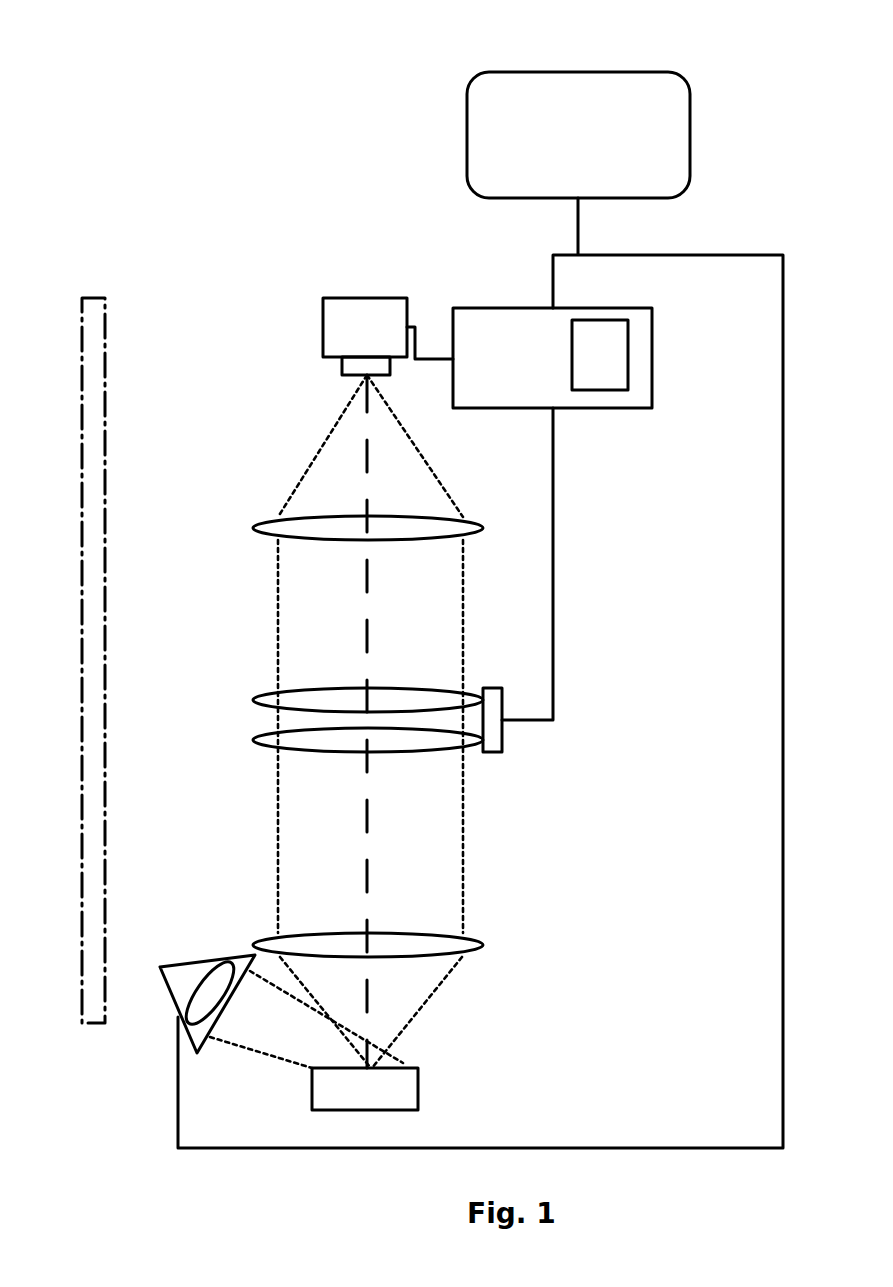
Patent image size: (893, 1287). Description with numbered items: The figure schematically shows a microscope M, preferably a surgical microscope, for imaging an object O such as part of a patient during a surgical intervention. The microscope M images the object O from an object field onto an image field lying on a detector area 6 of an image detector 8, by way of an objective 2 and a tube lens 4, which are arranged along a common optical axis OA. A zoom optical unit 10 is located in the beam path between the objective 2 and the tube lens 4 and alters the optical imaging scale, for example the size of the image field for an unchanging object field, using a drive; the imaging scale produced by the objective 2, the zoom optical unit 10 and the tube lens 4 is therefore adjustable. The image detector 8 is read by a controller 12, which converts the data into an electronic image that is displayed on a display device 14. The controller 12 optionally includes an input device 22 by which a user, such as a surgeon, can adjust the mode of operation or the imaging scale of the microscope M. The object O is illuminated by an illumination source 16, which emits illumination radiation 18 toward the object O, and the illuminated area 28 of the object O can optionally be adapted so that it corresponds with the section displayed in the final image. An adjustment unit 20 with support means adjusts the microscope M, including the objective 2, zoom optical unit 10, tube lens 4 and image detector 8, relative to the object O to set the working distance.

The microscope M is at (278, 211).
The display device 14 is at (578, 70).
The controller 12 is at (652, 330).
The input device 22 is at (615, 375).
The image detector 8 is at (323, 328).
The detector area 6 is at (342, 365).
The tube lens 4 is at (253, 528).
The zoom optical unit 10 is at (595, 680).
The objective 2 is at (483, 945).
The illumination source 16 is at (160, 967).
The illumination radiation 18 is at (263, 1053).
The adjustment unit 20 is at (82, 650).
The illuminated area 28 is at (380, 1055).
The object O is at (420, 1088).
The optical axis OA is at (358, 877).